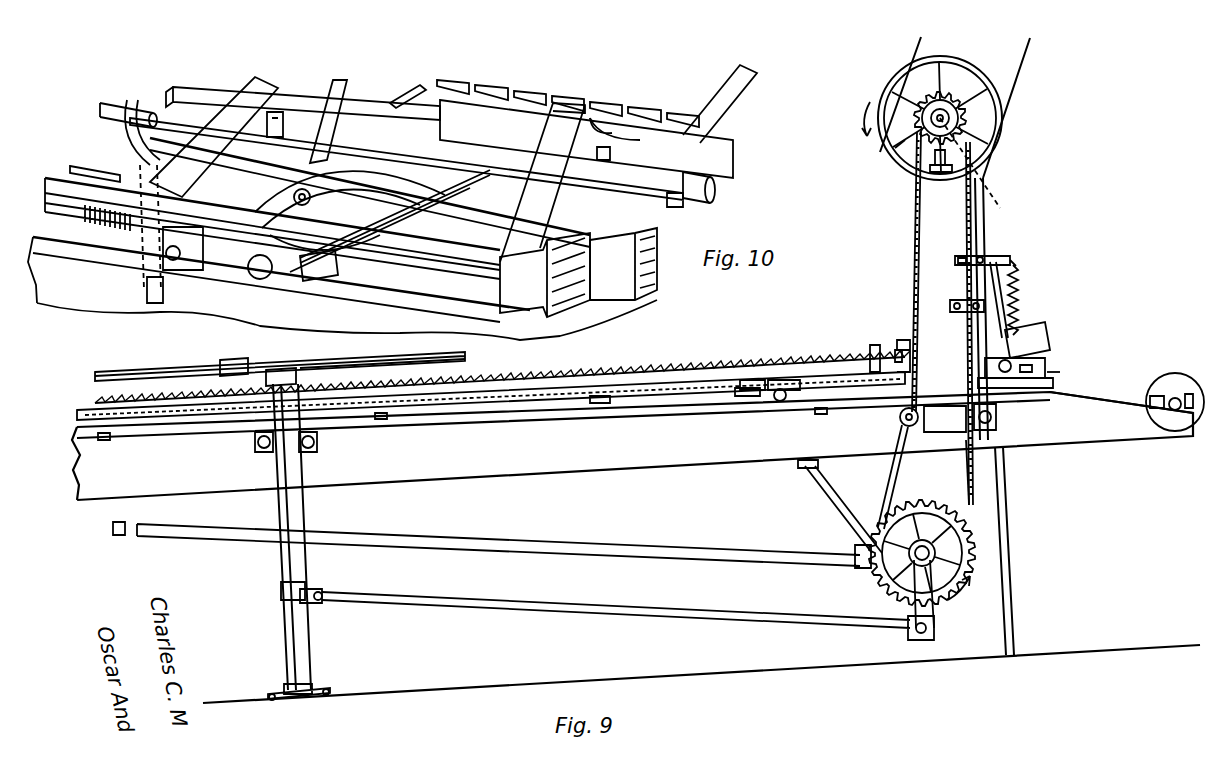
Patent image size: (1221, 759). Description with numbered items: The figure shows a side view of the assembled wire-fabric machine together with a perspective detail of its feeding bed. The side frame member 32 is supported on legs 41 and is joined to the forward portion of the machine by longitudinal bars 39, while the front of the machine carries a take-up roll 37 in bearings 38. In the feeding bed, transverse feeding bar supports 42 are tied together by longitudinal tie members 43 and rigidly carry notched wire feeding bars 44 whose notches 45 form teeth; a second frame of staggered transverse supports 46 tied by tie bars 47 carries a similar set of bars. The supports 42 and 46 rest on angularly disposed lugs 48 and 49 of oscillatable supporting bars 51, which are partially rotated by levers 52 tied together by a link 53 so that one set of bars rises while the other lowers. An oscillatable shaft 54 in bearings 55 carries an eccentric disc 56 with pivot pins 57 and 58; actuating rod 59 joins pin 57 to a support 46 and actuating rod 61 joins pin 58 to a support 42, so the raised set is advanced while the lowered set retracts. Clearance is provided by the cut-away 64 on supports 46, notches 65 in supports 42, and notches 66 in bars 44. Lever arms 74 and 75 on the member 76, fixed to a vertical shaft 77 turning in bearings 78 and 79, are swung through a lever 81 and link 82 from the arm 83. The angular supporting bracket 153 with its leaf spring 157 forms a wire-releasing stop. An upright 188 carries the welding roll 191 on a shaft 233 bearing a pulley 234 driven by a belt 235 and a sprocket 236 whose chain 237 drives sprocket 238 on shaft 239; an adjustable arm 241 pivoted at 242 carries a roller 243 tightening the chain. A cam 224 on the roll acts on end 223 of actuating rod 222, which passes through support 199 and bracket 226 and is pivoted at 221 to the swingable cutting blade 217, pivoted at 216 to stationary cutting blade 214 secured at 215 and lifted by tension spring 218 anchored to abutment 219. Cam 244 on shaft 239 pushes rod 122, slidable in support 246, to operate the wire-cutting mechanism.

In FIG. 10, the side frame member 32 is at (85, 305).
In FIG. 9, the side frame member 32 is at (450, 472).
In FIG. 9, the take-up roll 37 is at (1175, 383).
In FIG. 9, the bearings 38 is at (1148, 392).
In FIG. 10, the longitudinal bars 39 is at (85, 168).
In FIG. 9, the legs 41 is at (1010, 604).
In FIG. 10, the transverse feeding bar supports 42 is at (632, 278).
In FIG. 9, the transverse feeding bar supports 42 is at (640, 400).
In FIG. 10, the longitudinal tie members 43 is at (512, 262).
In FIG. 9, the longitudinal tie members 43 is at (640, 372).
In FIG. 10, the notched wire feeding bars 44 is at (676, 96).
In FIG. 9, the notched wire feeding bars 44 is at (878, 350).
In FIG. 10, the notches 45 is at (548, 85).
In FIG. 10, the transverse supports 46 is at (548, 192).
In FIG. 9, the transverse supports 46 is at (598, 405).
In FIG. 10, the tie bars 47 is at (405, 103).
In FIG. 9, the tie bars 47 is at (758, 375).
In FIG. 10, the lug 48 is at (695, 200).
In FIG. 10, the lug 49 is at (598, 150).
In FIG. 10, the oscillatable supporting bars 51 is at (690, 178).
In FIG. 10, the levers 52 is at (112, 104).
In FIG. 10, the link 53 is at (165, 302).
In FIG. 10, the oscillatable shaft 54 is at (395, 180).
In FIG. 9, the oscillatable shaft 54 is at (782, 405).
In FIG. 10, the bearings 55 is at (232, 278).
In FIG. 9, the bearings 55 is at (746, 400).
In FIG. 10, the eccentric disc 56 is at (282, 168).
In FIG. 9, the eccentric disc 56 is at (786, 378).
In FIG. 10, the pivot pin 57 is at (240, 192).
In FIG. 10, the pivot pin 58 is at (300, 278).
In FIG. 10, the actuating rod 59 is at (432, 205).
In FIG. 10, the actuating rod 61 is at (253, 281).
In FIG. 10, the cut-away 64 is at (132, 124).
In FIG. 10, the notches 65 is at (284, 126).
In FIG. 10, the notches 66 is at (622, 130).
In FIG. 9, the lever arm 74 is at (146, 370).
In FIG. 9, the lever arm 75 is at (380, 362).
In FIG. 9, the member 76 is at (243, 372).
In FIG. 9, the vertical shaft 77 is at (297, 514).
In FIG. 9, the bearing 78 is at (316, 685).
In FIG. 9, the bearing 79 is at (262, 456).
In FIG. 9, the lever 81 is at (280, 590).
In FIG. 9, the link 82 is at (605, 624).
In FIG. 9, the arm 83 is at (908, 618).
In FIG. 9, the rod 122 is at (622, 545).
In FIG. 9, the angular supporting bracket 153 is at (896, 350).
In FIG. 9, the leaf spring 157 is at (903, 335).
In FIG. 9, the upright 188 is at (988, 196).
In FIG. 9, the welding roll 191 is at (960, 118).
In FIG. 9, the support 199 is at (938, 173).
In FIG. 9, the stationary cutting blade 214 is at (1040, 355).
In FIG. 9, the securing point 215 is at (1010, 380).
In FIG. 9, the pivot 216 is at (1065, 370).
In FIG. 9, the swingable cutting blade 217 is at (1040, 330).
In FIG. 9, the tension spring 218 is at (1014, 264).
In FIG. 9, the stationary abutment 219 is at (995, 255).
In FIG. 9, the pivot 221 is at (1006, 300).
In FIG. 9, the actuating rod 222 is at (1020, 282).
In FIG. 9, the rod end 223 is at (990, 144).
In FIG. 9, the cam 224 is at (888, 90).
In FIG. 9, the bracket 226 is at (950, 304).
In FIG. 9, the shaft 233 is at (943, 60).
In FIG. 9, the pulley 234 is at (955, 70).
In FIG. 9, the belt 235 is at (1010, 85).
In FIG. 9, the sprocket 236 is at (895, 148).
In FIG. 9, the chain 237 is at (975, 478).
In FIG. 9, the sprocket 238 is at (975, 550).
In FIG. 9, the shaft 239 is at (960, 575).
In FIG. 9, the adjustable arm 241 is at (942, 426).
In FIG. 9, the pivot 242 is at (990, 420).
In FIG. 9, the roller 243 is at (900, 422).
In FIG. 9, the cam 244 is at (878, 585).
In FIG. 9, the support 246 is at (828, 506).